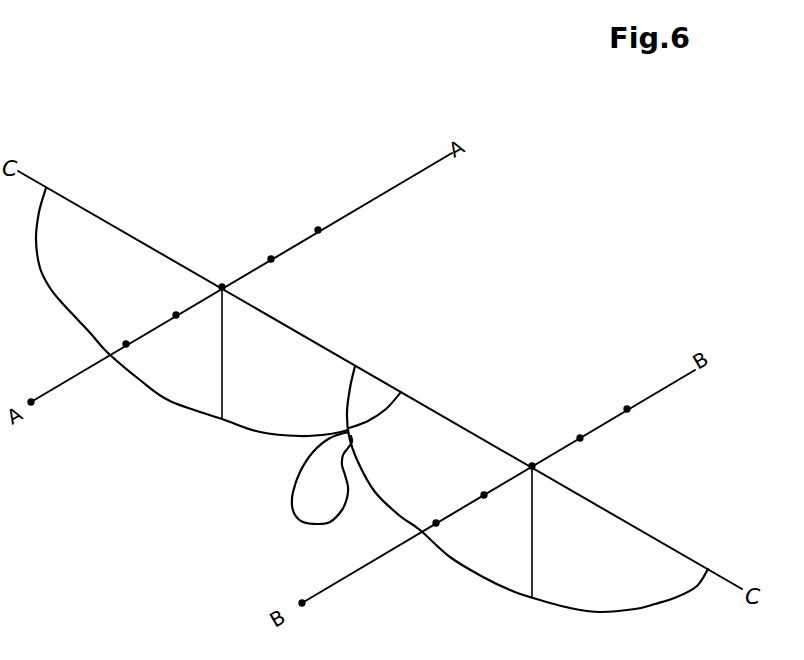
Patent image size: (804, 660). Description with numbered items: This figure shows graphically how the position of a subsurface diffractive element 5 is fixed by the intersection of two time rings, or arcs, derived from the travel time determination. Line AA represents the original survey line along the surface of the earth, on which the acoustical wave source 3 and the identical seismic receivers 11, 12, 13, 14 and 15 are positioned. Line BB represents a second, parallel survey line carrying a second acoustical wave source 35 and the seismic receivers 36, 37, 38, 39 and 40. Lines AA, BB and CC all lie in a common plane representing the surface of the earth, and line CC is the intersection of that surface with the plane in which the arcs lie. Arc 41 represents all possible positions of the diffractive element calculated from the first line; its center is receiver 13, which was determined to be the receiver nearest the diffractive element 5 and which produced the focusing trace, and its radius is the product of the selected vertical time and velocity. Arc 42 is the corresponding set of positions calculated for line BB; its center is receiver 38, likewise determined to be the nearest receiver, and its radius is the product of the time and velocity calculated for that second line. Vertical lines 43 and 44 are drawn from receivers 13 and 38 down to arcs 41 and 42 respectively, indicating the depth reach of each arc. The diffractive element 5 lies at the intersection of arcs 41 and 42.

The acoustical wave source 3 is at (20, 387).
The diffractive element 5 is at (293, 507).
The seismic receiver 11 is at (115, 328).
The seismic receiver 12 is at (164, 299).
The seismic receiver 13 is at (211, 271).
The seismic receiver 14 is at (259, 243).
The seismic receiver 15 is at (306, 214).
The second acoustical wave source 35 is at (289, 587).
The seismic receiver 36 is at (422, 507).
The seismic receiver 37 is at (470, 479).
The seismic receiver 38 is at (519, 450).
The seismic receiver 39 is at (567, 422).
The seismic receiver 40 is at (614, 393).
The arc 41 is at (171, 399).
The arc 42 is at (633, 612).
The vertical depth line of first profile 43 is at (224, 373).
The vertical depth line of second profile 44 is at (534, 550).